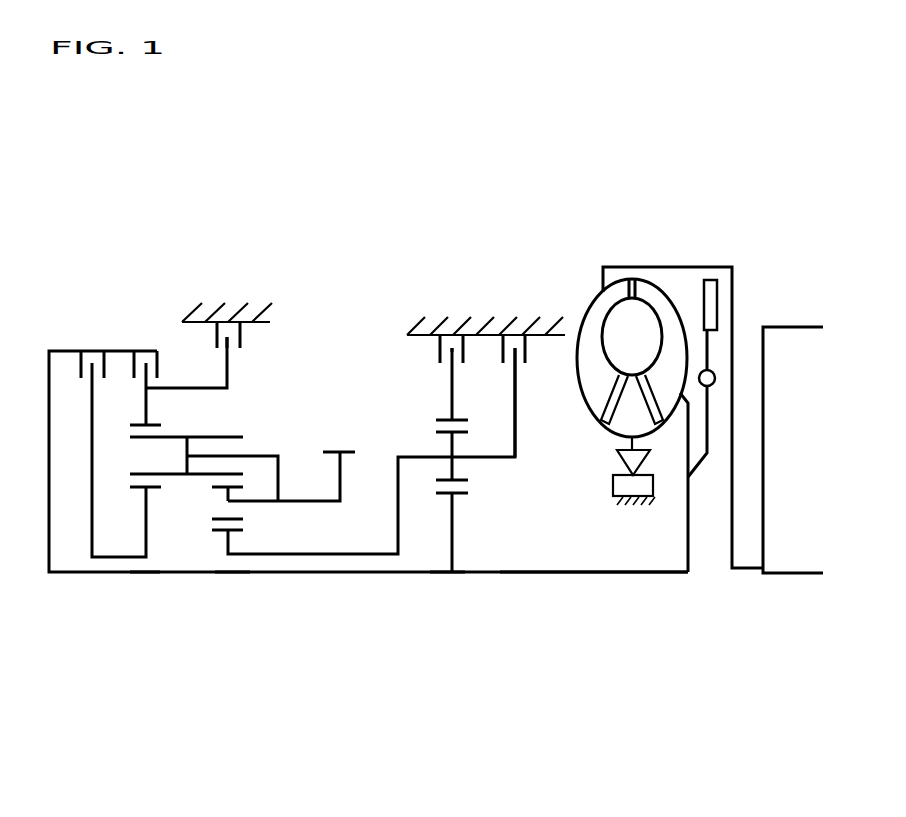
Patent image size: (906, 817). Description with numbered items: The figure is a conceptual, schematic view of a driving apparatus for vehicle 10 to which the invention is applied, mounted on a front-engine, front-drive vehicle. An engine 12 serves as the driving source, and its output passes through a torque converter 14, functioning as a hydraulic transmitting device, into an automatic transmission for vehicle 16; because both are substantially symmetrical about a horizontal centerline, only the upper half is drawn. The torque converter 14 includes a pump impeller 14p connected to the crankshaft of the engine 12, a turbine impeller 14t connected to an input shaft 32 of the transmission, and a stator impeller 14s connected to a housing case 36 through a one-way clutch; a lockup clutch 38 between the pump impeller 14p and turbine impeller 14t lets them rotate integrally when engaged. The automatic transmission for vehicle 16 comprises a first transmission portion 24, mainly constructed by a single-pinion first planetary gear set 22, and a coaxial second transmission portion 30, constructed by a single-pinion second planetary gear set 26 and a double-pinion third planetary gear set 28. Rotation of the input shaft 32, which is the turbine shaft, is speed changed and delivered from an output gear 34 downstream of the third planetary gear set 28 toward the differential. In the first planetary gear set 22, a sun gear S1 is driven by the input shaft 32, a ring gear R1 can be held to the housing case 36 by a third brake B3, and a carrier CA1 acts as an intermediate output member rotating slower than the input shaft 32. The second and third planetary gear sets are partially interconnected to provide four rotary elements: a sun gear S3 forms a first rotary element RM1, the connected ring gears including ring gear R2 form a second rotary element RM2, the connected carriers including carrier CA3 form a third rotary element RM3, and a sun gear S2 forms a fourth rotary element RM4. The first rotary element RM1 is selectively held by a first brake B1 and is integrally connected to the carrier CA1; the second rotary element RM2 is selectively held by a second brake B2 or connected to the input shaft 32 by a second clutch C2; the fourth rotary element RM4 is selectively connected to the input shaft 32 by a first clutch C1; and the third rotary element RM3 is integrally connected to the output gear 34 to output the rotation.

The driving apparatus for vehicle 10 is at (154, 188).
The engine 12 is at (795, 563).
The torque converter 14 is at (707, 226).
The pump impeller 14p is at (597, 310).
The turbine impeller 14t is at (660, 300).
The stator impeller 14s is at (612, 433).
The automatic transmission for vehicle 16 is at (546, 243).
The first planetary gear set 22 is at (448, 580).
The first transmission portion 24 is at (378, 334).
The second planetary gear set 26 is at (146, 578).
The third planetary gear set 28 is at (232, 580).
The second transmission portion 30 is at (296, 299).
The input shaft 32 is at (542, 575).
The output gear 34 is at (343, 450).
The housing case 36 is at (222, 307).
The lockup clutch 38 is at (711, 289).
The first clutch C1 is at (89, 351).
The second clutch C2 is at (143, 351).
The first brake B1 is at (536, 351).
The second brake B2 is at (244, 337).
The third brake B3 is at (436, 351).
The sun gear S1 is at (458, 497).
The sun gear S2 is at (152, 487).
The sun gear S3 is at (232, 533).
The ring gear R1 is at (457, 418).
The ring gear R2 is at (146, 421).
The carrier CA1 is at (515, 423).
The carrier CA3 is at (253, 456).
The first rotary element RM1 is at (293, 557).
The second rotary element RM2 is at (190, 387).
The third rotary element RM3 is at (307, 502).
The fourth rotary element RM4 is at (147, 527).